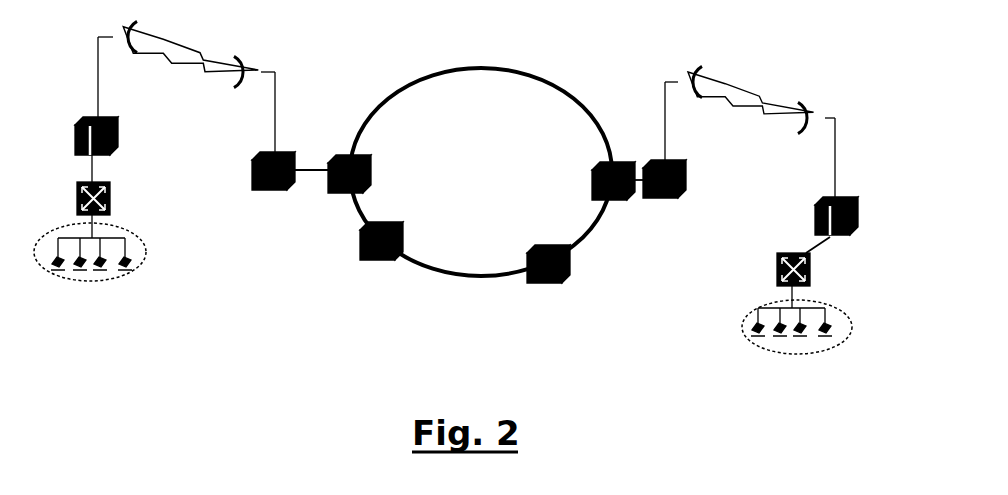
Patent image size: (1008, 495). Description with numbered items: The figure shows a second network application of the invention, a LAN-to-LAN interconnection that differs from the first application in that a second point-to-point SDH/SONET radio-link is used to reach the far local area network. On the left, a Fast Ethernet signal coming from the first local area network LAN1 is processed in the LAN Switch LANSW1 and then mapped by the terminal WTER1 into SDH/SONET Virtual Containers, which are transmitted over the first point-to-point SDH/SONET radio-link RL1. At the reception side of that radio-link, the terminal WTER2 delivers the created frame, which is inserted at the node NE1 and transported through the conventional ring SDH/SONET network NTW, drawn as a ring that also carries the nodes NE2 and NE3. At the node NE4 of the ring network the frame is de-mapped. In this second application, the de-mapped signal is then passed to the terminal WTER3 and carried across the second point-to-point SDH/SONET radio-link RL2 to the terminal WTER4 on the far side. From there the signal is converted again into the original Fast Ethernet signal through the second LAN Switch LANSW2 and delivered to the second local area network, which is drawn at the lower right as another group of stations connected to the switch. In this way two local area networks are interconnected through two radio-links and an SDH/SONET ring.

The radio link 1 RL1 is at (186, 54).
The mapping wireless terminal WTER1 is at (118, 133).
The first LAN Switch LANSW1 is at (110, 192).
The first local area network LAN1 is at (146, 255).
The reception-side wireless terminal WTER2 is at (275, 190).
The SDH/SONET ring network NTW is at (479, 124).
The insertion network element NE1 is at (370, 162).
The network element NE2 is at (400, 223).
The network element NE3 is at (534, 245).
The de-mapping network element NE4 is at (592, 178).
The radio link 2 RL2 is at (750, 96).
The wireless terminal 3 WTER3 is at (678, 198).
The wireless terminal 4 WTER4 is at (815, 218).
The second LAN Switch LANSW2 is at (777, 272).